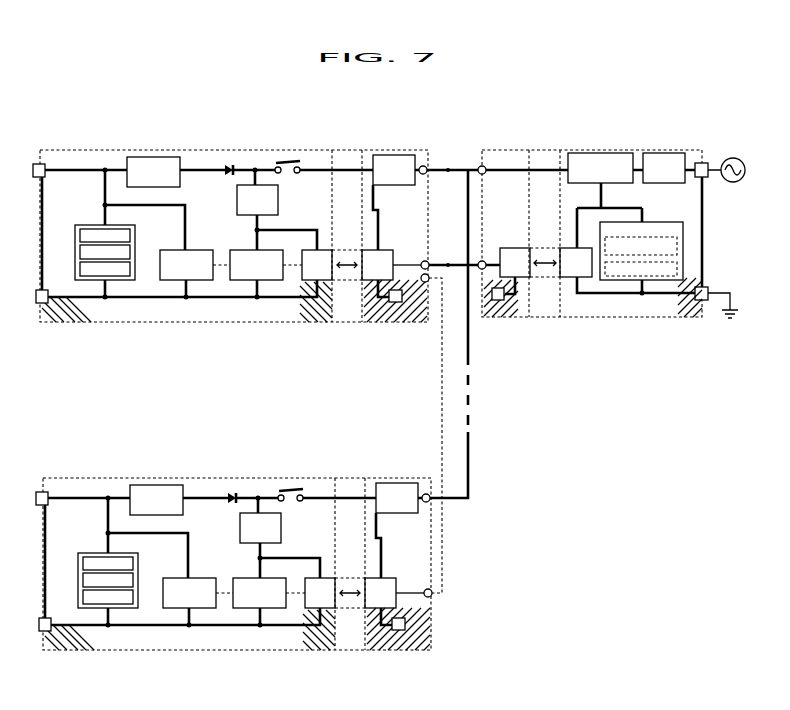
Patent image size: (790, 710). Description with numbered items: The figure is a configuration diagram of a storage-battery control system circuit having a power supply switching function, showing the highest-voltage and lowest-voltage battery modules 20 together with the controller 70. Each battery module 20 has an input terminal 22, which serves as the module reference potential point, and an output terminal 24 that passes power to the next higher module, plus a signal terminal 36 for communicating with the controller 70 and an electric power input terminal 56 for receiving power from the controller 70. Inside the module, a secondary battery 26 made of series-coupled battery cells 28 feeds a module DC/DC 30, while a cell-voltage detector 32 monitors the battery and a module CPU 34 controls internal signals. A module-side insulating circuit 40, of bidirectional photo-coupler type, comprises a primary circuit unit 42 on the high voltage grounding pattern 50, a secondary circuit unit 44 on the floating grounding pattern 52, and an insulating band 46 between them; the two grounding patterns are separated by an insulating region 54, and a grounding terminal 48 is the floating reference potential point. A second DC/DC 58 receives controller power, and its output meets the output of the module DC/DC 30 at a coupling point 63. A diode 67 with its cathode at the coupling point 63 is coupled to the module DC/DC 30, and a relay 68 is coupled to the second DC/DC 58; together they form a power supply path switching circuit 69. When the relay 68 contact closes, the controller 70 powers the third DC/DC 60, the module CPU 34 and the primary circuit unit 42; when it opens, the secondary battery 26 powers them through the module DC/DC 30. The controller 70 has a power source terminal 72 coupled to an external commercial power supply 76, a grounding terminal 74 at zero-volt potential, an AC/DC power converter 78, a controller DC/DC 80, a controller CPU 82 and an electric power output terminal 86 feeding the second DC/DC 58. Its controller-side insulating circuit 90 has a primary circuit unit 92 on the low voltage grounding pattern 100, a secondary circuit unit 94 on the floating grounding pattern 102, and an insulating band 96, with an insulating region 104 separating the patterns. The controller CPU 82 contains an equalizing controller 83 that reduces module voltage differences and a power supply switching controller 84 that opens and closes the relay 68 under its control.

The battery module 20 is at (80, 150).
The input terminal 22 is at (42, 290).
The output terminal 24 is at (40, 178).
The secondary battery 26 is at (85, 225).
The battery cell 28 is at (88, 250).
The module DC/DC 30 is at (127, 165).
The cell-voltage detector 32 is at (205, 250).
The module CPU 34 is at (240, 250).
The signal terminal 36 is at (428, 261).
The module-side insulating circuit 40 is at (349, 402).
The primary circuit unit 42 is at (327, 248).
The secondary circuit unit 44 is at (375, 250).
The insulating band 46 is at (348, 255).
The grounding terminal 48 is at (400, 302).
The high voltage grounding pattern 50 is at (318, 318).
The floating grounding pattern 52 is at (393, 312).
The insulating region 54 is at (348, 310).
The electric power input terminal 56 is at (425, 166).
The second DC/DC 58 is at (393, 155).
The third DC/DC 60 is at (237, 200).
The coupling point 63 is at (255, 168).
The diode 67 is at (227, 165).
The relay 68 is at (291, 304).
The power supply path switching circuit 69 is at (258, 290).
The controller 70 is at (518, 150).
The power source terminal 72 is at (703, 162).
The grounding terminal 74 is at (705, 287).
The external commercial power supply 76 is at (733, 183).
The AC/DC power converter 78 is at (662, 153).
The controller DC/DC 80 is at (599, 153).
The controller CPU 82 is at (660, 222).
The equalizing controller 83 is at (628, 282).
The power supply switching controller 84 is at (677, 247).
The electric power output terminal 86 is at (480, 167).
The controller-side insulating circuit 90 is at (597, 242).
The primary circuit unit 92 is at (625, 257).
The secondary circuit unit 94 is at (516, 248).
The insulating band 96 is at (547, 255).
The low voltage grounding pattern 100 is at (680, 312).
The floating grounding pattern 102 is at (512, 305).
The insulating region 104 is at (550, 312).